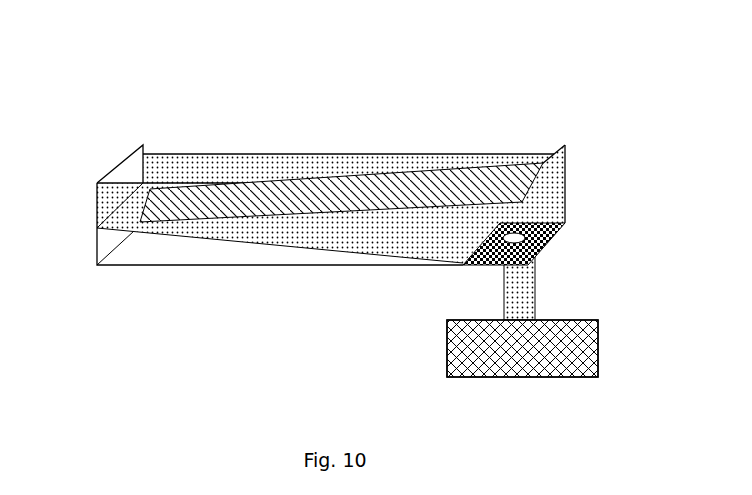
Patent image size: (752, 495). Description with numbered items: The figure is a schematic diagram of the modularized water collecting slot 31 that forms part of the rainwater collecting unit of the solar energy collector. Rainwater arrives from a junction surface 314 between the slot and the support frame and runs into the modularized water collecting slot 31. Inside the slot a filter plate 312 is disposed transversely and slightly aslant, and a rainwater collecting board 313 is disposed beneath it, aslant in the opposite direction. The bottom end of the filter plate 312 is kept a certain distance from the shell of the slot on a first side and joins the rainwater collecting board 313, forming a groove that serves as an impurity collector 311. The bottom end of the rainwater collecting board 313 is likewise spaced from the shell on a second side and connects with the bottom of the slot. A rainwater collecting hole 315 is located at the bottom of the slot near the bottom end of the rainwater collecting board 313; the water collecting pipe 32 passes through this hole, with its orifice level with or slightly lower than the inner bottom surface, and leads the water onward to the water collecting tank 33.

The modularized water collecting slot 31 is at (126, 170).
The impurity collector 311 is at (157, 168).
The filter plate 312 is at (233, 207).
The rainwater collecting board 313 is at (308, 236).
The junction surface 314 is at (384, 158).
The rainwater collecting hole 315 is at (505, 230).
The water collecting pipe 32 is at (522, 300).
The water collecting tank 33 is at (573, 327).